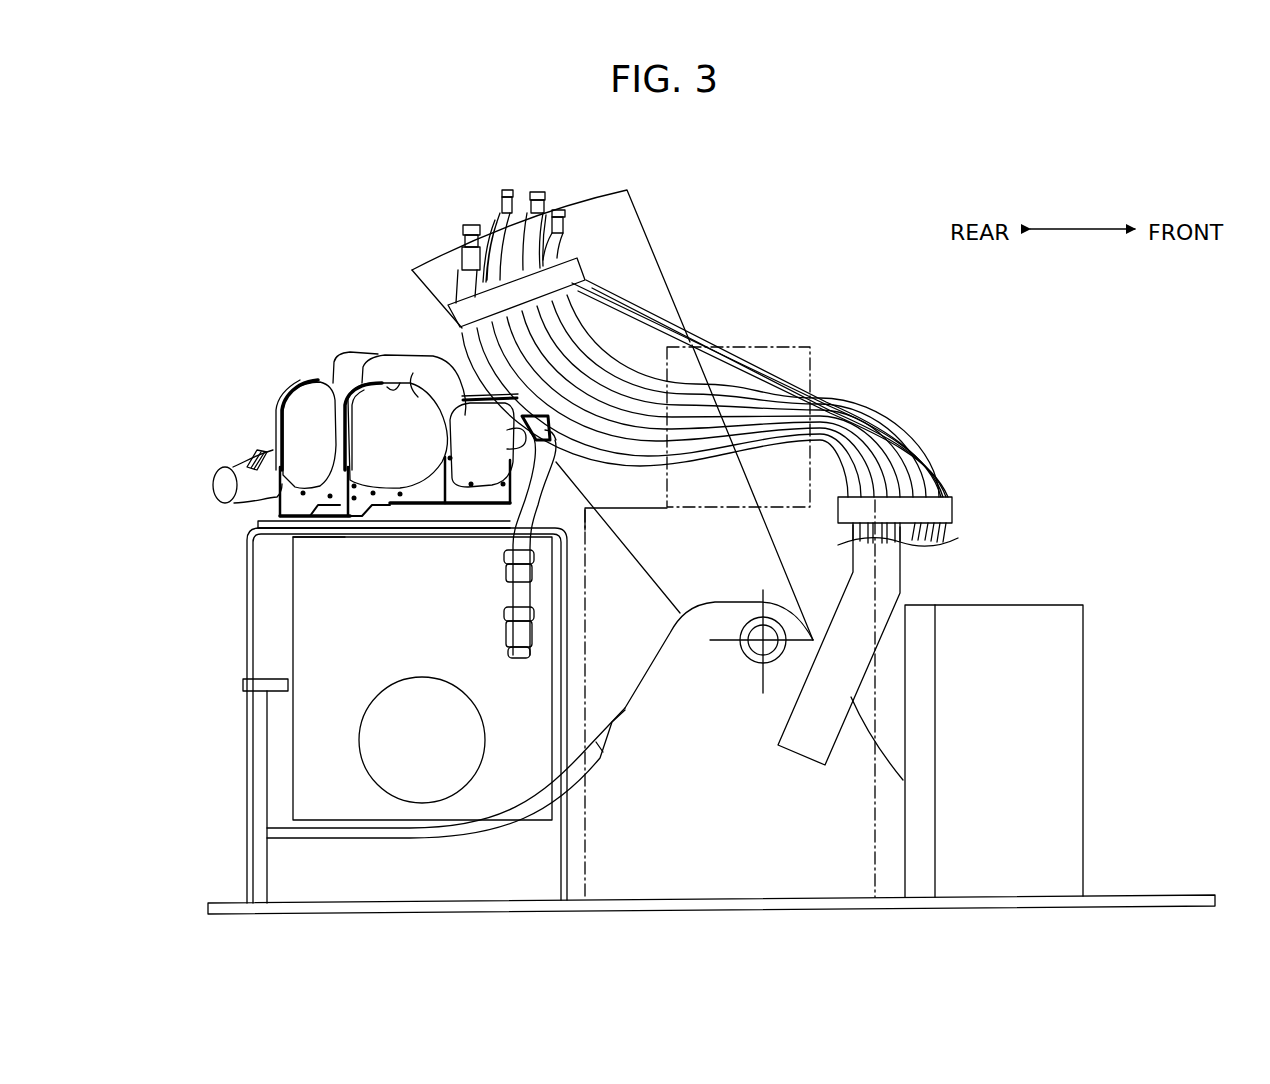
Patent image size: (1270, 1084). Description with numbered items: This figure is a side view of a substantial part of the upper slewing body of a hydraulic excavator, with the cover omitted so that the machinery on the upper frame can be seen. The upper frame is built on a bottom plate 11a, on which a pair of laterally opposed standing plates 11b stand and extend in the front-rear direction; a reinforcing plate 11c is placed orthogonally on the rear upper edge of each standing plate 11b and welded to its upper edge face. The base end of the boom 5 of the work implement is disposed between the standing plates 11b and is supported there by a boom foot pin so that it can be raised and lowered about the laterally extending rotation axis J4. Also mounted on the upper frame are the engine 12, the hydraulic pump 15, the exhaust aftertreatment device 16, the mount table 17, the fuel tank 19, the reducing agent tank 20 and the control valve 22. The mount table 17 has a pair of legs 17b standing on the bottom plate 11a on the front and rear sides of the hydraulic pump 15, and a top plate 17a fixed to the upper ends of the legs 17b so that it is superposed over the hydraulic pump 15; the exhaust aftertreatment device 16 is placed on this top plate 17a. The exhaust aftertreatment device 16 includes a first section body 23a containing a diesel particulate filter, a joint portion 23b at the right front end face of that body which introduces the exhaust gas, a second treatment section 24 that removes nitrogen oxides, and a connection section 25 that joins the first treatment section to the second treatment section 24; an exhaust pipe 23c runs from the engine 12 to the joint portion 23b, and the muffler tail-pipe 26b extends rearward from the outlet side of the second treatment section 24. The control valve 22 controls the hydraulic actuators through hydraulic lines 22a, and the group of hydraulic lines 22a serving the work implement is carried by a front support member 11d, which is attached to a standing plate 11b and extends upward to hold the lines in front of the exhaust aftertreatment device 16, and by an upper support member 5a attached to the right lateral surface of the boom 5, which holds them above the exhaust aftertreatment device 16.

The boom 5 is at (665, 280).
The upper support member 5a is at (585, 266).
The bottom plate 11a is at (1155, 903).
The standing plates 11b is at (660, 656).
The reinforcing plates 11c is at (600, 752).
The front support member 11d is at (945, 512).
The engine 12 is at (293, 603).
The hydraulic pump 15 is at (418, 676).
The exhaust aftertreatment device 16 is at (292, 322).
The mount table 17 is at (226, 584).
The top plate 17a is at (345, 537).
The legs 17b is at (245, 666).
The fuel tank 19 is at (870, 833).
The reducing agent tank 20 is at (790, 346).
The control valve 22 is at (1068, 604).
The hydraulic lines 22a is at (554, 236).
The first section body 23a is at (480, 470).
The joint portion 23b is at (460, 429).
The exhaust pipe 23c is at (555, 466).
The second treatment section 24 is at (300, 415).
The connection section 25 is at (407, 373).
The tail-pipe 26b is at (246, 467).
The rotation axis J4 is at (755, 622).